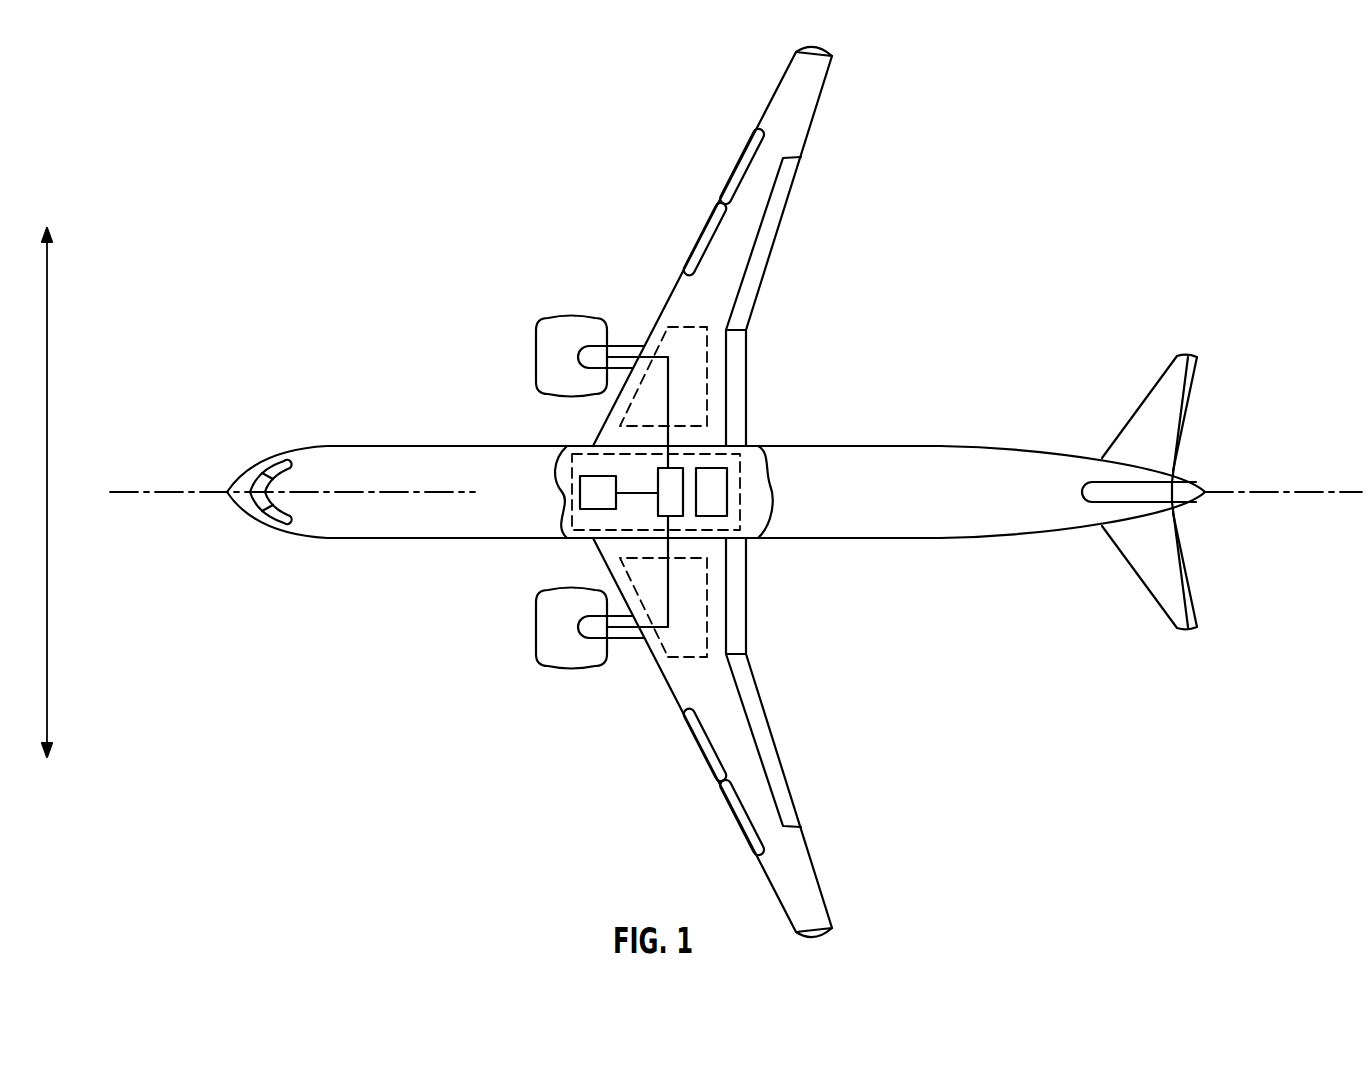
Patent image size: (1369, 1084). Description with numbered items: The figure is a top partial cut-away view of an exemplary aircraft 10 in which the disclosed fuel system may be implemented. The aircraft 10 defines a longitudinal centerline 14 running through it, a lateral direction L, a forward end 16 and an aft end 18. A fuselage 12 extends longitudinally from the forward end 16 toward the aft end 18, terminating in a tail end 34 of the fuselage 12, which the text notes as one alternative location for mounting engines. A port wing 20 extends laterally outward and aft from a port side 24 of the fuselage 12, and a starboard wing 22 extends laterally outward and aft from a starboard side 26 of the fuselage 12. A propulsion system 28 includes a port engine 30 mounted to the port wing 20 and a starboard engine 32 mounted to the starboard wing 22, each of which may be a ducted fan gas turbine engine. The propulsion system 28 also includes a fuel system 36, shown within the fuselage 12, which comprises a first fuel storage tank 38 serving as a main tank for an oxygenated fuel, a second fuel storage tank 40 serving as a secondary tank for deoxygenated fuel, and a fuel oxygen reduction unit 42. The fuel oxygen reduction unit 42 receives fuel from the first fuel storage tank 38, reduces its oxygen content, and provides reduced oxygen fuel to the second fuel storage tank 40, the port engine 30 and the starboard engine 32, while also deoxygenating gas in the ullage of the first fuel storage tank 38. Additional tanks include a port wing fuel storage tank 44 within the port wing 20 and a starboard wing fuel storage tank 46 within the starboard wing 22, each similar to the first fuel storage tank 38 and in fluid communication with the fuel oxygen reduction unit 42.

The aircraft 10 is at (985, 158).
The fuselage 12 is at (698, 508).
The longitudinal centerline 14 is at (153, 494).
The forward end 16 is at (225, 520).
The aft end 18 is at (1113, 582).
The port wing 20 is at (747, 798).
The starboard wing 22 is at (812, 73).
The port side 24 is at (405, 572).
The starboard side 26 is at (405, 440).
The propulsion system 28 is at (574, 483).
The port engine 30 is at (549, 660).
The starboard engine 32 is at (560, 328).
The tail end 34 is at (1052, 567).
The fuel system 36 is at (656, 481).
The first fuel storage tank 38 is at (727, 473).
The second fuel storage tank 40 is at (675, 478).
The fuel oxygen reduction unit 42 is at (593, 510).
The port wing fuel storage tank 44 is at (705, 597).
The starboard wing fuel storage tank 46 is at (690, 327).
The lateral direction L is at (47, 650).